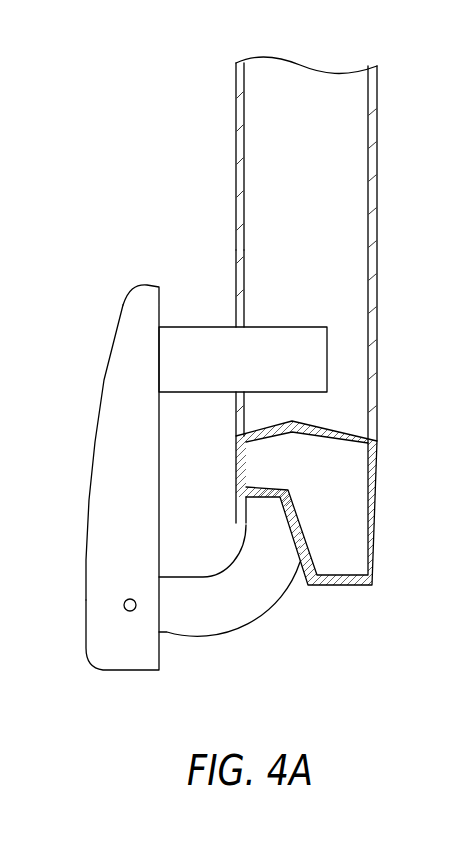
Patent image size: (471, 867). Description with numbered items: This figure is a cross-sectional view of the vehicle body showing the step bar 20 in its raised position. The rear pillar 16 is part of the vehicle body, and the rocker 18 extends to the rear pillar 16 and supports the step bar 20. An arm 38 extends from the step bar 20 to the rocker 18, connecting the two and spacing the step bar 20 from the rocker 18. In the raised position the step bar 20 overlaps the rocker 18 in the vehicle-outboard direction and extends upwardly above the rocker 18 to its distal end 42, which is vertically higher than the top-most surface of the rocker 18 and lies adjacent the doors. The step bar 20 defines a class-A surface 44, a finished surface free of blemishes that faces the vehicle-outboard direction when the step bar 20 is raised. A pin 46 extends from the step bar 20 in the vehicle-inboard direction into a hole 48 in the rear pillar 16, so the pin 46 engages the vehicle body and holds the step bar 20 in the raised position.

The rear pillar 16 is at (378, 258).
The rocker 18 is at (378, 458).
The step bar 20 is at (82, 431).
The arm 38 is at (238, 595).
The distal end 42 is at (145, 285).
The class-A surface 44 is at (95, 442).
The pin 46 is at (292, 325).
The hole 48 is at (237, 325).